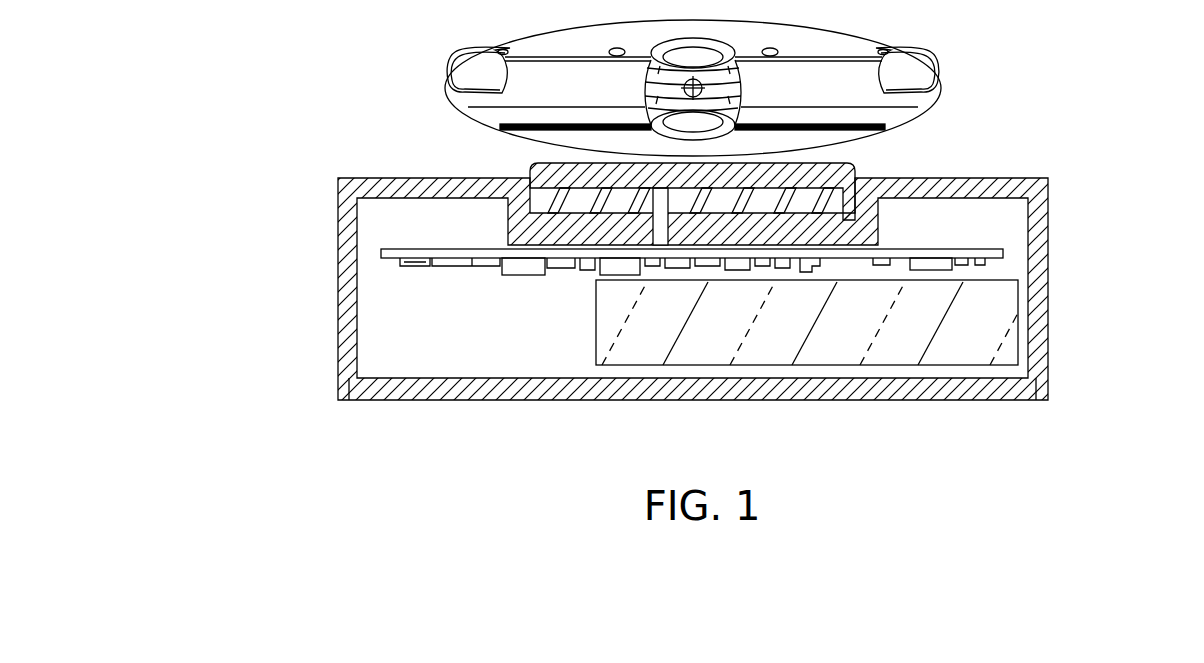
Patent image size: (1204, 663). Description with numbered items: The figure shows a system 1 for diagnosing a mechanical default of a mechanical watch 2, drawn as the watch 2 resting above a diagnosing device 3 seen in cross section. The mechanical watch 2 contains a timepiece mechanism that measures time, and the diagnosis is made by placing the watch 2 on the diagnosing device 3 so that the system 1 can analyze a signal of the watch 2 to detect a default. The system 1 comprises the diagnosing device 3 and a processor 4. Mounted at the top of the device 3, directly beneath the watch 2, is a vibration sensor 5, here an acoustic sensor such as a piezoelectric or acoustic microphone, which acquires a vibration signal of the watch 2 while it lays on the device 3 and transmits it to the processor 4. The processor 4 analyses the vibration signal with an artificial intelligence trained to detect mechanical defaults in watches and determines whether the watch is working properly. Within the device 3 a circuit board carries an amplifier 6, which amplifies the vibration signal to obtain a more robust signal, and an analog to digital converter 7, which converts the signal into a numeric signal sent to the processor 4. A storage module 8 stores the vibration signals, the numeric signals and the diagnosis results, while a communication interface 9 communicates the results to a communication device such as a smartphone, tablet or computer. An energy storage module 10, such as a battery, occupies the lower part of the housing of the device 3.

The system 1 is at (298, 132).
The mechanical watch 2 is at (925, 100).
The diagnosing device 3 is at (325, 330).
The processor 4 is at (810, 272).
The vibration sensor 5 is at (773, 185).
The amplifier 6 is at (888, 306).
The analog to digital converter 7 is at (620, 268).
The storage module 8 is at (923, 263).
The communication interface 9 is at (525, 268).
The energy storage module 10 is at (847, 357).